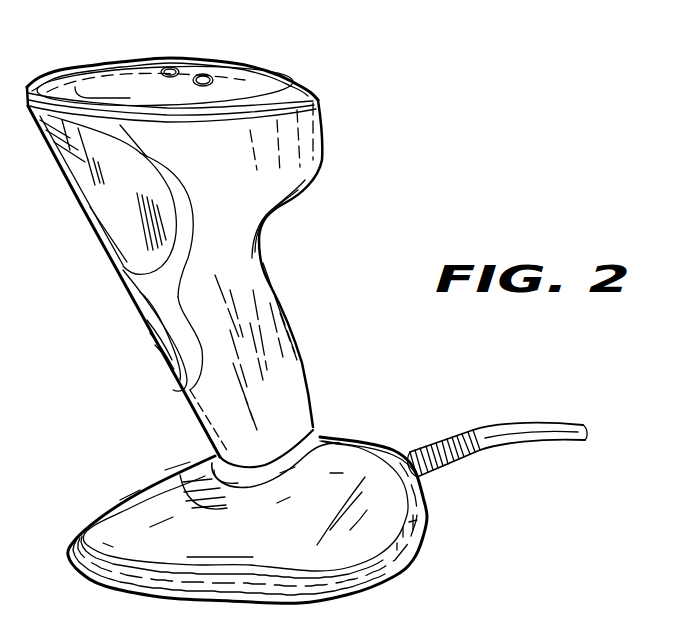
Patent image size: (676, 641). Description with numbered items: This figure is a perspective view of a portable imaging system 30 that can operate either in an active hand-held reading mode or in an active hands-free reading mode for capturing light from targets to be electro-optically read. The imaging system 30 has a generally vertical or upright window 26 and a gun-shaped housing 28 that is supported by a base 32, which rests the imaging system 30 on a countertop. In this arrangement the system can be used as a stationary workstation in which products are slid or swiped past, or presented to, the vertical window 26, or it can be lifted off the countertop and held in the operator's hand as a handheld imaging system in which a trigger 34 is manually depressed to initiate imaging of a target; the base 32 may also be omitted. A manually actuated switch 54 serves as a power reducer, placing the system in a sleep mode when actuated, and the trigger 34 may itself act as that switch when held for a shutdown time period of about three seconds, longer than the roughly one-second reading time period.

The window 26 is at (100, 213).
The gun-shaped housing 28 is at (294, 346).
The imaging system 30 is at (320, 256).
The base 32 is at (427, 513).
The trigger 34 is at (147, 328).
The switch 54 is at (204, 77).